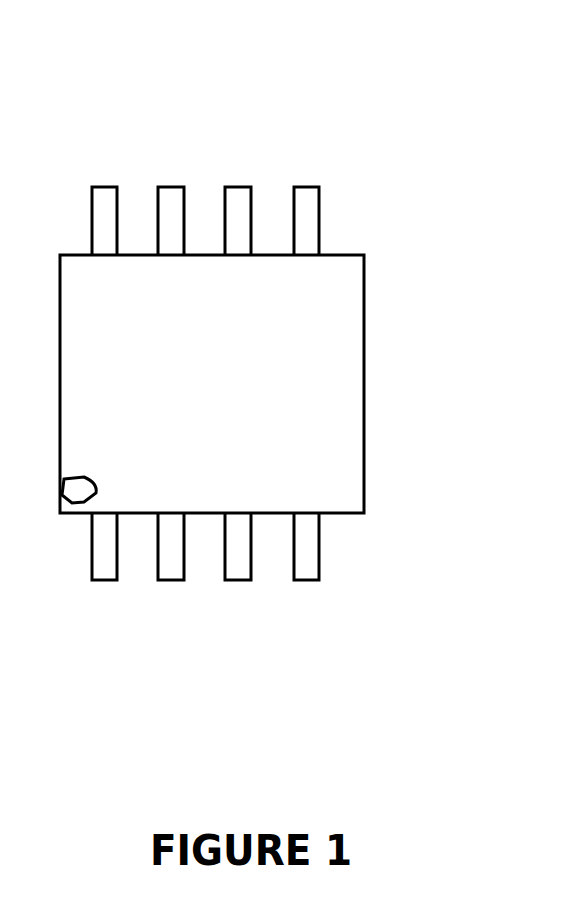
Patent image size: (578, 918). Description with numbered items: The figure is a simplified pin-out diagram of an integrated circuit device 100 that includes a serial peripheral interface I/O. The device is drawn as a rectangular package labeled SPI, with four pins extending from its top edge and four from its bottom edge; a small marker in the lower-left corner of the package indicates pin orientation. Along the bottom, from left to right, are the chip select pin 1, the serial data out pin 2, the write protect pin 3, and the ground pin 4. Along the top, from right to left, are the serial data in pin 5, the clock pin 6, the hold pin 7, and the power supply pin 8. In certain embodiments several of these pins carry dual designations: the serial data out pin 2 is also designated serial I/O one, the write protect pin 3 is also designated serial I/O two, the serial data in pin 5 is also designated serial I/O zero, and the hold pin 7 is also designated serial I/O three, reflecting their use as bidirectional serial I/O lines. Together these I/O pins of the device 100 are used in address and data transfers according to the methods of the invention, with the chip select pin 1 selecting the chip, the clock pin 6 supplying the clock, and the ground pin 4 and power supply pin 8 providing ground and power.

The integrated circuit device 100 is at (435, 122).
The CS# pin 1 is at (102, 639).
The SO pin 2 is at (158, 639).
The WP# pin 3 is at (262, 639).
The GND pin 4 is at (323, 639).
The SI pin 5 is at (329, 136).
The SCLK pin 6 is at (253, 136).
The HOLD# pin 7 is at (186, 136).
The VCC pin 8 is at (88, 136).